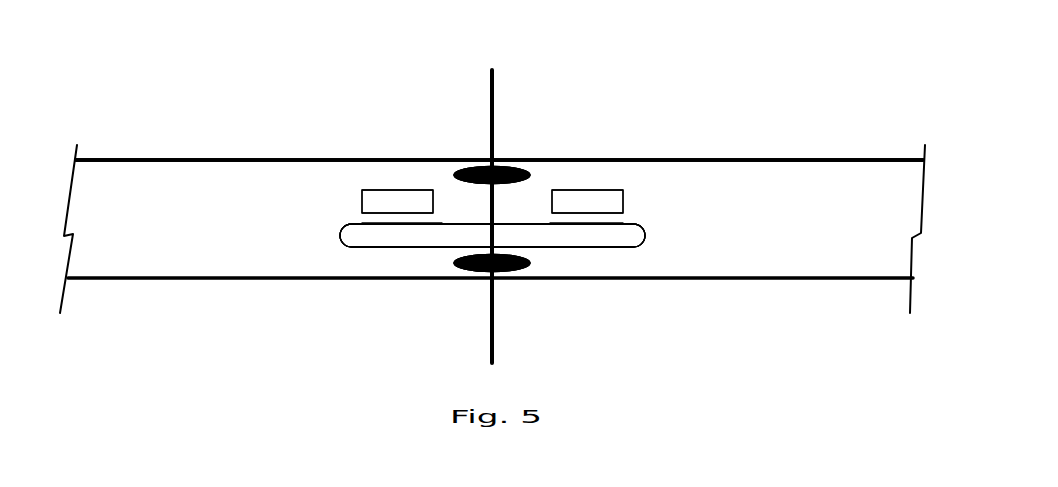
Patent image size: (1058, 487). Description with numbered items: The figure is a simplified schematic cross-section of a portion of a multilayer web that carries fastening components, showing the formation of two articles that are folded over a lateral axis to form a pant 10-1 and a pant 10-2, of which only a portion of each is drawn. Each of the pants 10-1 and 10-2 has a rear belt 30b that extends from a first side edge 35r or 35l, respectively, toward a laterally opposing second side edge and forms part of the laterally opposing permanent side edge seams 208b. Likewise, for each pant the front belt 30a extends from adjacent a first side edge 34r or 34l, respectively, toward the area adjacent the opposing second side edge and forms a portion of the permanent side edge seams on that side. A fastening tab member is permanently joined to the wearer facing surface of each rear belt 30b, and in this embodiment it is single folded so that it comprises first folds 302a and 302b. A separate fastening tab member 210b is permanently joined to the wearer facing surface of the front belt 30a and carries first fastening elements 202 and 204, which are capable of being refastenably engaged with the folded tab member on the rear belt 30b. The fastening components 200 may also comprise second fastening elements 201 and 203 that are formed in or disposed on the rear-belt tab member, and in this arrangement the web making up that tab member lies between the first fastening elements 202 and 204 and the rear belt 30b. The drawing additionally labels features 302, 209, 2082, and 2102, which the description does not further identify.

The pant 10-1 is at (242, 113).
The pant 10-2 is at (796, 116).
The front belt 30a is at (837, 160).
The rear belt 30b is at (804, 278).
The carrier tape layer 302 is at (137, 160).
The first fold 302a is at (342, 236).
The first fold 302b is at (645, 236).
The first side edge 34r is at (492, 160).
The first side edge 34l is at (493, 160).
The first side edge 35r is at (492, 278).
The first side edge 35l is at (496, 279).
The fastening component 200 is at (786, 218).
The second fastening element 201 is at (603, 220).
The first fastening element 202 is at (623, 205).
The second fastening element 203 is at (358, 221).
The first fastening element 204 is at (362, 193).
The permanent side edge seam 208b is at (453, 262).
The cutting line 209 is at (493, 82).
The fastening tab member 210b is at (445, 189).
The upper conductive bump 2082 is at (538, 188).
The connecting member 2102 is at (363, 248).